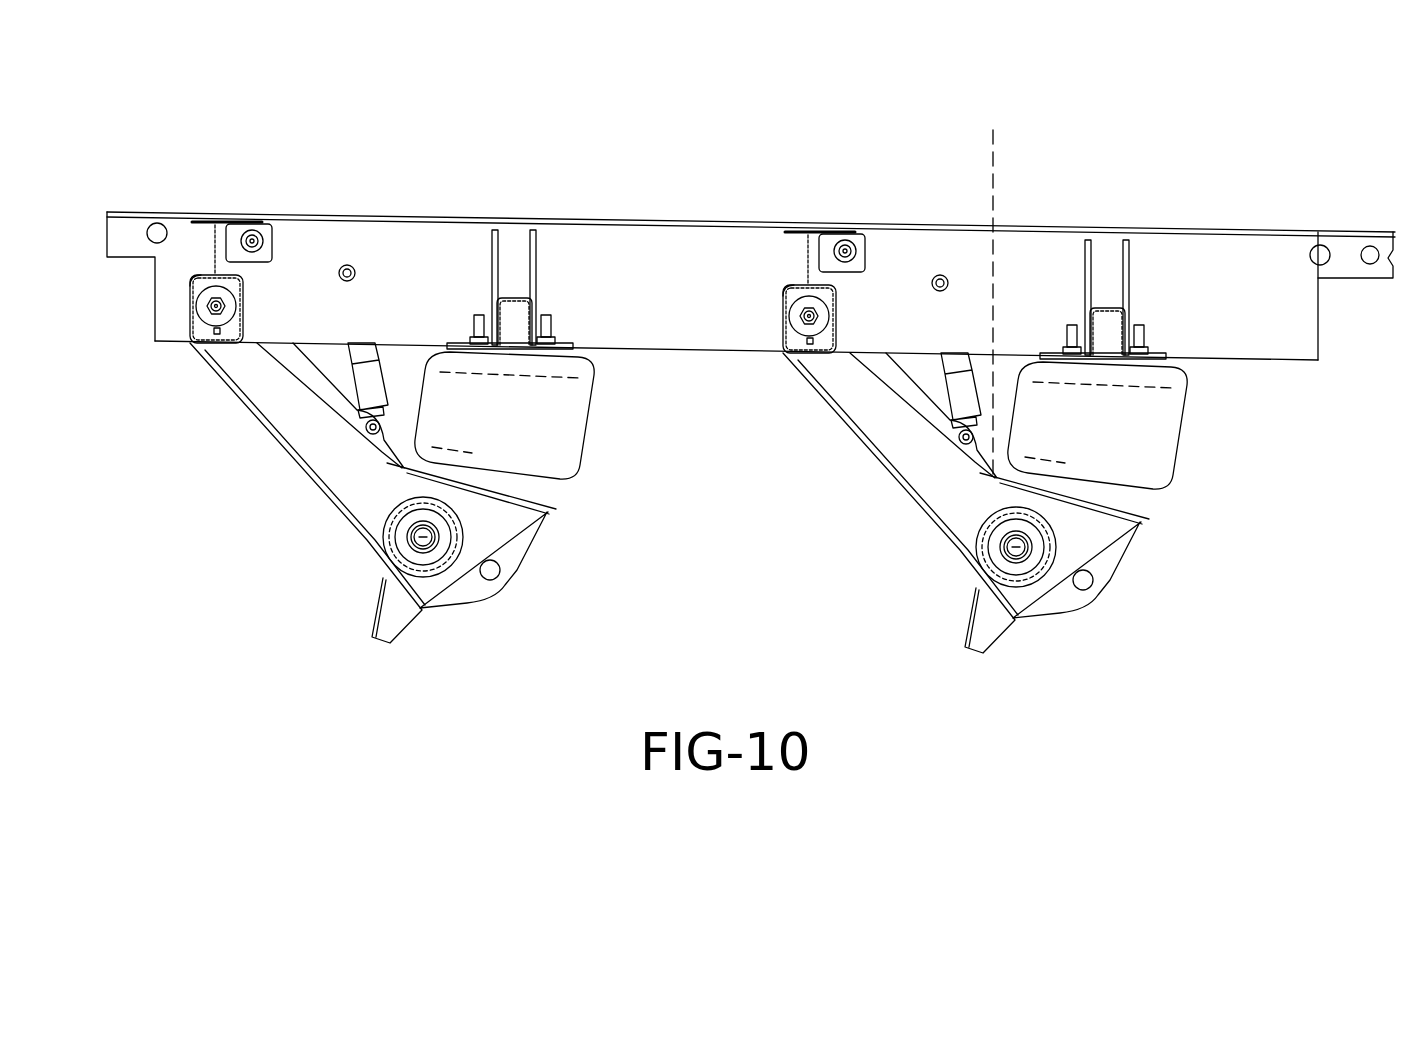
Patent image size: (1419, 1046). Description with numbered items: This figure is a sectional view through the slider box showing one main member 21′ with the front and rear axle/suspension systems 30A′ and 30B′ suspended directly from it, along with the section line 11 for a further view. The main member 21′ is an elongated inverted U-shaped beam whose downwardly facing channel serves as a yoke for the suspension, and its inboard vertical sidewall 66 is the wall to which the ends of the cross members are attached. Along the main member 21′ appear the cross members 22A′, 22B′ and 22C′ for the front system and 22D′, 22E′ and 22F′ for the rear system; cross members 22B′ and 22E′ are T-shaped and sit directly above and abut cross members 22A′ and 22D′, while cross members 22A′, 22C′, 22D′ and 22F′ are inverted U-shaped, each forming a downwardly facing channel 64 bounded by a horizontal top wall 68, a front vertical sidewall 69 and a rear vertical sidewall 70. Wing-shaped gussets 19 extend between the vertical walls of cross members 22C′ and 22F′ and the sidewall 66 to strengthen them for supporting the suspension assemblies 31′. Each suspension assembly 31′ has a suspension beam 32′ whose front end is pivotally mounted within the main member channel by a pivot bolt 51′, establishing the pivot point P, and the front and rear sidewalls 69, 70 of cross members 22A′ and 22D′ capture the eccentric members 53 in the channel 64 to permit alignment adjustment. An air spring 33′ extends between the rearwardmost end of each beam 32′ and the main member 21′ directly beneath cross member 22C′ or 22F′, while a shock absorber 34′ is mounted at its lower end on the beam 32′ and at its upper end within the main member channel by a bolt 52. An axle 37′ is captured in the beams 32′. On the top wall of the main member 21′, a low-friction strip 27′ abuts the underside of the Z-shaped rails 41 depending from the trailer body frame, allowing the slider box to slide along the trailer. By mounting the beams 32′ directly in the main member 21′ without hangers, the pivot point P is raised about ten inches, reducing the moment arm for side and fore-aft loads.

The section line 11 is at (993, 130).
The gussets 19 is at (490, 265).
The main member 21′ is at (1287, 372).
The cross member 22A′ is at (254, 262).
The cross member 22B′ is at (203, 216).
The cross member 22C′ is at (548, 306).
The cross member 22D′ is at (850, 272).
The cross member 22E′ is at (797, 225).
The cross member 22F′ is at (1141, 317).
The low-friction strip 27′ is at (1245, 234).
The front axle/suspension system 30A′ is at (449, 622).
The rear axle/suspension system 30B′ is at (1041, 632).
The suspension assembly 31′ is at (300, 472).
The suspension beam 32′ is at (721, 480).
The air spring 33′ is at (563, 430).
The shock absorber 34′ is at (380, 400).
The axle 37′ is at (395, 557).
The rails 41 is at (1337, 232).
The pivot bolt 51′ is at (220, 305).
The bolt 52 is at (350, 270).
The eccentric members 53 is at (235, 322).
The channel 64 is at (200, 272).
The inboard vertical sidewall 66 is at (665, 250).
The horizontal top wall 68 is at (207, 277).
The front vertical sidewall 69 is at (208, 305).
The rear vertical sidewall 70 is at (240, 318).
The pivot point P is at (212, 312).